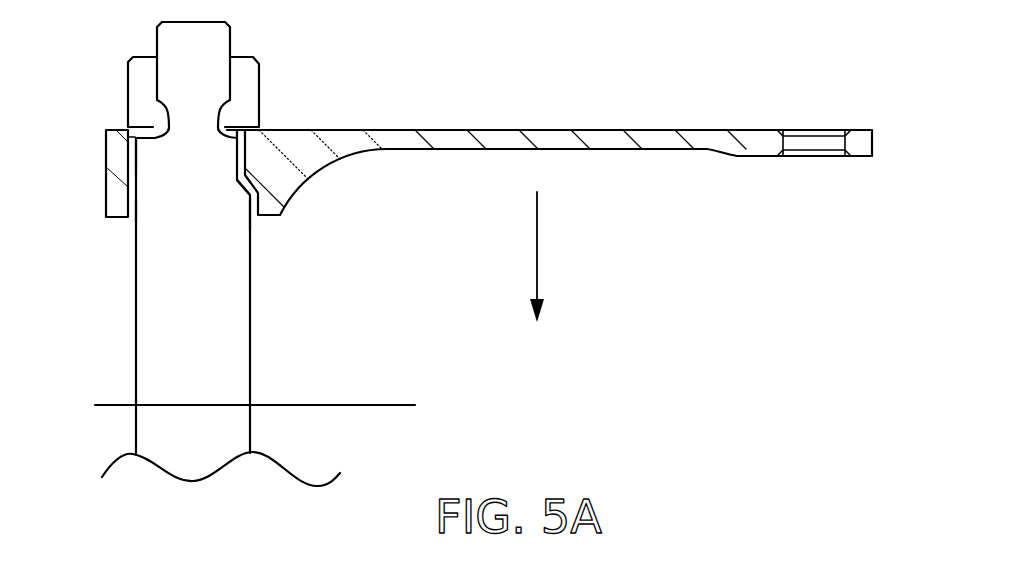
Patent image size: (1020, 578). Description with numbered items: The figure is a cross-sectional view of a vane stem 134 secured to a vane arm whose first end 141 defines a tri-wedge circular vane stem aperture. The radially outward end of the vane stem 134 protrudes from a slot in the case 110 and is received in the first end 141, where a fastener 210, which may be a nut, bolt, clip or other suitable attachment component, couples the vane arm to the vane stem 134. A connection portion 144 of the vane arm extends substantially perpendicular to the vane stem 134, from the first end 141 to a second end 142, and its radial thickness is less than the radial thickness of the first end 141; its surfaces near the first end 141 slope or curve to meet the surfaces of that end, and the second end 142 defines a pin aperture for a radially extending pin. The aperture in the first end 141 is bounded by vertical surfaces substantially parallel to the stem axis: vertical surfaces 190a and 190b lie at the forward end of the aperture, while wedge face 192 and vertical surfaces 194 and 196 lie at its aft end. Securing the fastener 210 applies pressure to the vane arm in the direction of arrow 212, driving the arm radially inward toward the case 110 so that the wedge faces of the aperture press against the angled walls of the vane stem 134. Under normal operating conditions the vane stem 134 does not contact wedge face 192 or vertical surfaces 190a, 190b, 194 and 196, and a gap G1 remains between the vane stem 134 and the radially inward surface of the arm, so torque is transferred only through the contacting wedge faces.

The fastener 210 is at (245, 58).
The vertical surface 194 is at (222, 137).
The vane stem 134 is at (209, 348).
The vertical surface 190b is at (137, 148).
The vertical surface 190a is at (133, 203).
The wedge face 192 is at (238, 185).
The vertical surface 196 is at (252, 216).
The connection portion 144 is at (435, 130).
The second end 142 is at (857, 148).
The first end 141 is at (117, 143).
The gap G1 is at (136, 215).
The case 110 is at (370, 405).
The arrow 212 is at (543, 244).